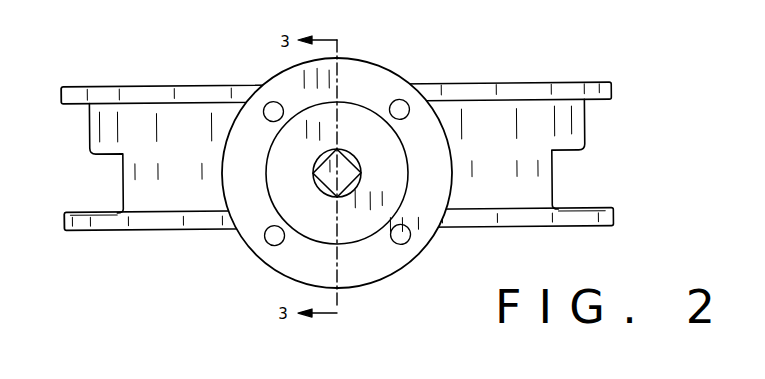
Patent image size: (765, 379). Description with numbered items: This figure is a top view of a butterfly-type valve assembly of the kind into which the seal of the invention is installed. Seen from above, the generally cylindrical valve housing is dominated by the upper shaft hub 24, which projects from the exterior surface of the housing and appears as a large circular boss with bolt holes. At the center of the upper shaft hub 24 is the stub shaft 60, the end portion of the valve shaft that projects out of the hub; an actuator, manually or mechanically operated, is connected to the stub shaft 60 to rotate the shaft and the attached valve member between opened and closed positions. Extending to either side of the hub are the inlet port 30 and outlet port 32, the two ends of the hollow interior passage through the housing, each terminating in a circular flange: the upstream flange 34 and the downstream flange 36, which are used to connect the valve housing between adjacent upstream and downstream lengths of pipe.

The upper shaft hub 24 is at (258, 261).
The inlet port 30 is at (155, 85).
The outlet port 32 is at (128, 230).
The upstream flange 34 is at (82, 86).
The downstream flange 36 is at (73, 230).
The stub shaft 60 is at (350, 150).